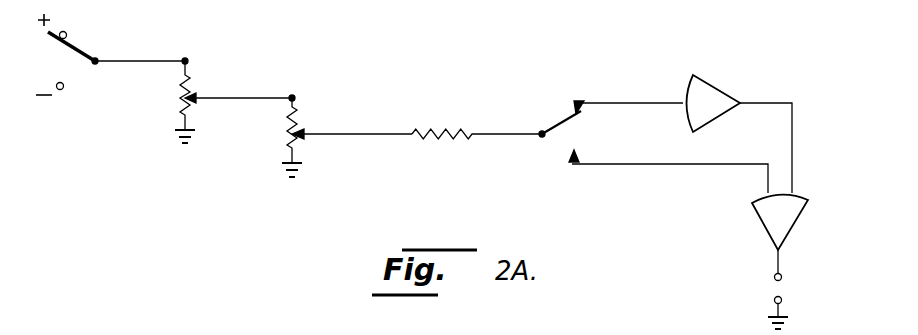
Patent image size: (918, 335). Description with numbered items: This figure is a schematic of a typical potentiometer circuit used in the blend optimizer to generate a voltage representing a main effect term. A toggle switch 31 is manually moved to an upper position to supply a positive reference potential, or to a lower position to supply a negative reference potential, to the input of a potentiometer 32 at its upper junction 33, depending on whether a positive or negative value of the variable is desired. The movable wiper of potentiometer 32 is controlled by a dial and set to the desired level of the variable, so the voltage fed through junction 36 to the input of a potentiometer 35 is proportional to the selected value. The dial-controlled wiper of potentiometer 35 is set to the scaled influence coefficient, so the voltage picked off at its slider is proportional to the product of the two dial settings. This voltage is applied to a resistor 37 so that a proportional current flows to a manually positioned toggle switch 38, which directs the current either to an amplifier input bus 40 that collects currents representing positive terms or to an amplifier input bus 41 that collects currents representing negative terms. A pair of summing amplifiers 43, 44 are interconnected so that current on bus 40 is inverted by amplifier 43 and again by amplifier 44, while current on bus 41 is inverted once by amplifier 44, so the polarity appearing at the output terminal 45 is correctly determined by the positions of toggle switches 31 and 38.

The toggle switch 31 is at (77, 45).
The potentiometer 32 is at (183, 95).
The junction 33 is at (185, 59).
The potentiometer 35 is at (291, 129).
The junction 36 is at (291, 95).
The resistor 37 is at (428, 128).
The toggle switch 38 is at (560, 121).
The amplifier input bus 40 is at (620, 102).
The amplifier input bus 41 is at (644, 163).
The summing amplifier 43 is at (708, 81).
The summing amplifier 44 is at (757, 218).
The output terminal 45 is at (776, 273).